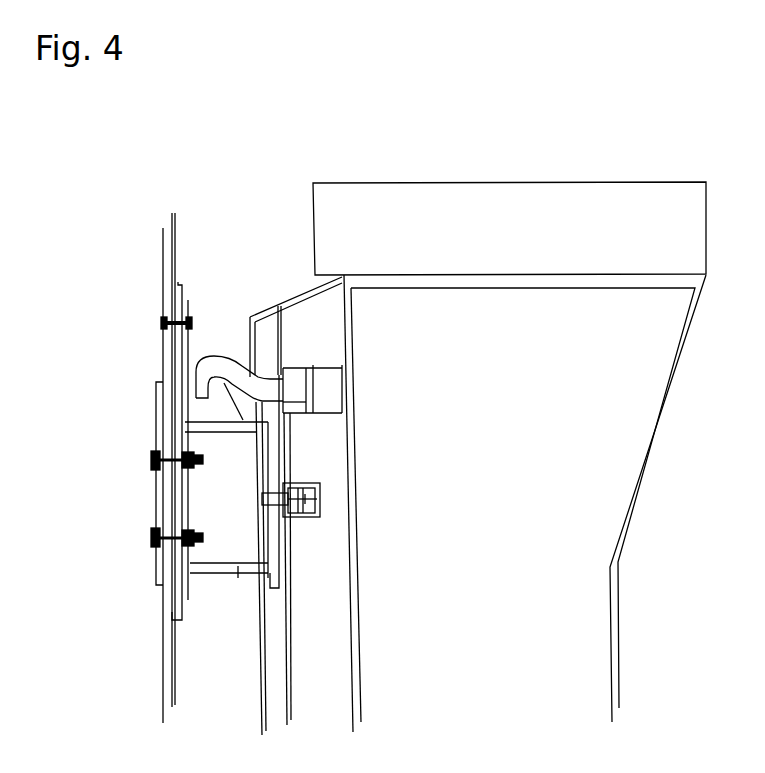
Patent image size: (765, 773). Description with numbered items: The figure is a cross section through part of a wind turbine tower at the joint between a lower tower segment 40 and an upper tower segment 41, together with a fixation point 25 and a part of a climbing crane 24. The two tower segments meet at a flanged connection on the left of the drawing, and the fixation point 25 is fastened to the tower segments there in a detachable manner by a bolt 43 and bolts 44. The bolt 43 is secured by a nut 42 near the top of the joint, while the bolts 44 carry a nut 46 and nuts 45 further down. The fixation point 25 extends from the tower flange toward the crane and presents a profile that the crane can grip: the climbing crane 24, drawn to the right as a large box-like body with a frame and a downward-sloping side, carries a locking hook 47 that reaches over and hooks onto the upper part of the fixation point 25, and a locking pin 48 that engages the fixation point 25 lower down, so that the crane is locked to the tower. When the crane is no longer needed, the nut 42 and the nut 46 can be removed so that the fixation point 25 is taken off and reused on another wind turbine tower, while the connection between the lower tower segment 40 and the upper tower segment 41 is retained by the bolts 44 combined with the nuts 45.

The climbing crane 24 is at (600, 638).
The fixation point 25 is at (238, 575).
The lower tower segment 40 is at (163, 678).
The upper tower segment 41 is at (172, 246).
The nut 42 is at (190, 308).
The bolt 43 is at (161, 325).
The bolts 44 is at (150, 543).
The nuts 45 is at (187, 493).
The nut 46 is at (190, 442).
The locking hook 47 is at (223, 367).
The locking pin 48 is at (317, 500).